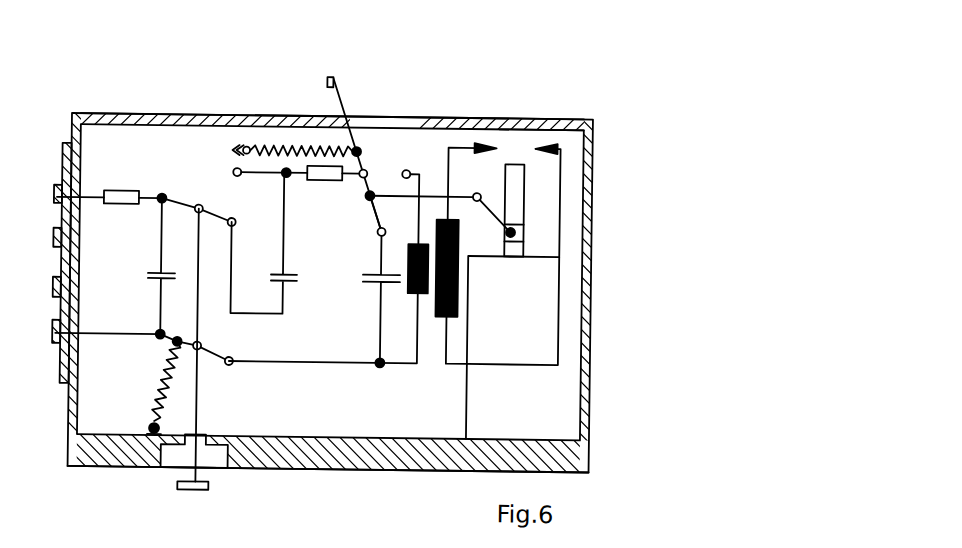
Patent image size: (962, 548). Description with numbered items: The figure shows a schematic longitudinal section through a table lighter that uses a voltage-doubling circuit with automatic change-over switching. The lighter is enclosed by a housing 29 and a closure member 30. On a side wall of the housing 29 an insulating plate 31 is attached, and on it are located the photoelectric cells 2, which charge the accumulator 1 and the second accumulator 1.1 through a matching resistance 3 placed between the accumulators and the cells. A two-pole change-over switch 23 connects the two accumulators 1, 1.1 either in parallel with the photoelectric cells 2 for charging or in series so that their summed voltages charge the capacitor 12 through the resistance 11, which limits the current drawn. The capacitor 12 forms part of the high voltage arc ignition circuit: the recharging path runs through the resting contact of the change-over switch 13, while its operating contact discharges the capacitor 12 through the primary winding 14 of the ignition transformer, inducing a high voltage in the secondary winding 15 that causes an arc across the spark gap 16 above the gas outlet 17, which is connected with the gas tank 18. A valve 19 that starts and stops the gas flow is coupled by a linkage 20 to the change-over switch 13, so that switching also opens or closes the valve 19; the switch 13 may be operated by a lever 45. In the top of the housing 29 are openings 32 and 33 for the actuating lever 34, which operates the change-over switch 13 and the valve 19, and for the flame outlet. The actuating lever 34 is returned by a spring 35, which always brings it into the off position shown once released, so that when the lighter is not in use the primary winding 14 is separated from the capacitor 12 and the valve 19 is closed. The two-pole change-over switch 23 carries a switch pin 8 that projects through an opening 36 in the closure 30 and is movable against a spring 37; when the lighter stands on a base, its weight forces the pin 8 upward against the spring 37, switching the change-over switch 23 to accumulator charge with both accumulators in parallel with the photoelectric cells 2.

The accumulator 1 is at (158, 278).
The second accumulator 1.1 is at (293, 280).
The photoelectric cells 2 is at (57, 197).
The matching resistance 3 is at (121, 190).
The switch pin 8 is at (192, 456).
The resistance 11 is at (327, 177).
The capacitor 12 is at (377, 280).
The change-over switch 13 is at (378, 220).
The primary winding 14 is at (413, 291).
The secondary winding 15 is at (440, 313).
The spark gap 16 is at (520, 137).
The gas outlet 17 is at (512, 158).
The gas tank 18 is at (552, 396).
The valve 19 is at (517, 228).
The linkage 20 is at (462, 190).
The two-pole change-over switch 23 is at (182, 202).
The housing 29 is at (481, 304).
The closure member 30 is at (397, 457).
The insulating plate 31 is at (63, 266).
The opening 32 is at (405, 118).
The opening 33 is at (535, 119).
The actuating lever 34 is at (344, 105).
The spring 35 is at (275, 141).
The opening 36 is at (202, 435).
The spring 37 is at (160, 389).
The lever 45 is at (326, 80).